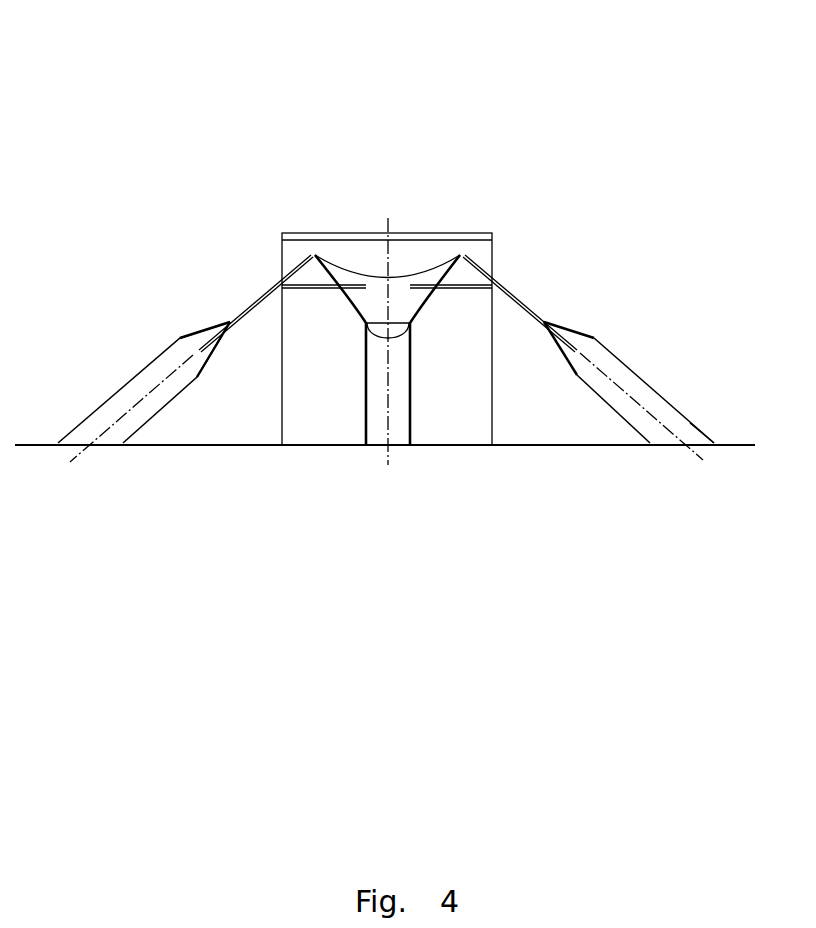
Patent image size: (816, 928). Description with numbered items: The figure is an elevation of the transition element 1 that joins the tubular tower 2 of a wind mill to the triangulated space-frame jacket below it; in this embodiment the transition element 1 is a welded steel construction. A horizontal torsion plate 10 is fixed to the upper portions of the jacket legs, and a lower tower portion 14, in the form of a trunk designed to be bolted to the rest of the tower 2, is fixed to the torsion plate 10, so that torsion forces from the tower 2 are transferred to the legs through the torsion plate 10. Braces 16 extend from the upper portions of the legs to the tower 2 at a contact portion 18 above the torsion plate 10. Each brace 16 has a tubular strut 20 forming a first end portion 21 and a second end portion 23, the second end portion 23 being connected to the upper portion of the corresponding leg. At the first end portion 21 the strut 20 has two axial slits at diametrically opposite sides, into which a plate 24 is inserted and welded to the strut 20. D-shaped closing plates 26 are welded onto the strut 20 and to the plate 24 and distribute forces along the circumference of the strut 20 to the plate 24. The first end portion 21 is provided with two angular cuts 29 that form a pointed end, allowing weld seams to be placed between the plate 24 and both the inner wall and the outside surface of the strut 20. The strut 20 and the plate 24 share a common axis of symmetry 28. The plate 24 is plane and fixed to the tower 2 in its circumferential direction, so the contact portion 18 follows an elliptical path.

The transition element 1 is at (525, 178).
The tower 2 is at (322, 230).
The horizontal torsion plate 10 is at (518, 446).
The lower tower portion 14 is at (332, 427).
The brace 16 is at (658, 369).
The contact portion 18 is at (397, 277).
The tubular strut 20 is at (645, 395).
The first end portion 21 is at (603, 345).
The second end portion 23 is at (700, 428).
The plate 24 is at (513, 297).
The D-shaped closing plate 26 is at (577, 328).
The axis of symmetry 28 is at (620, 387).
The angular cut 29 is at (168, 350).